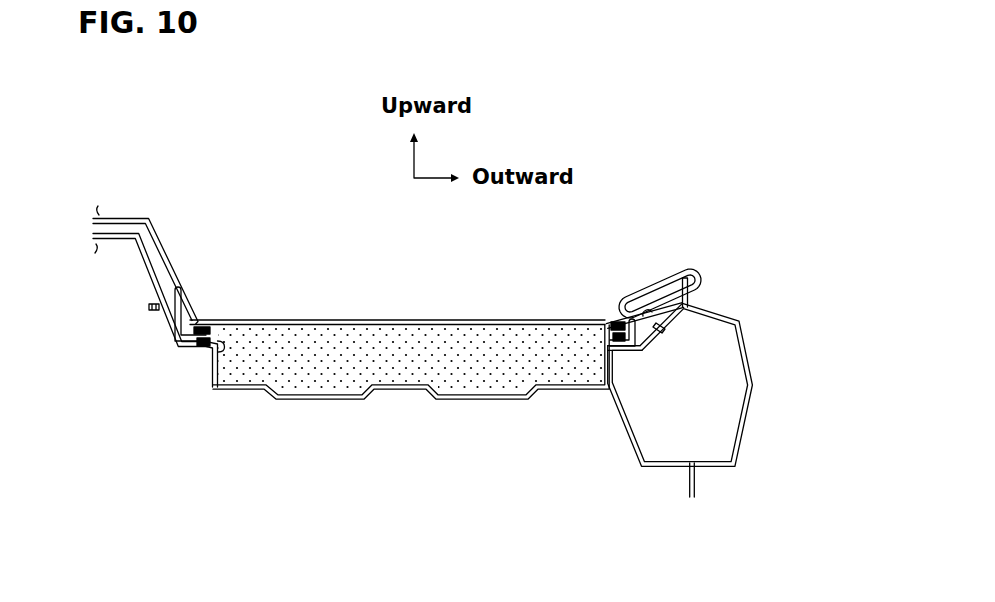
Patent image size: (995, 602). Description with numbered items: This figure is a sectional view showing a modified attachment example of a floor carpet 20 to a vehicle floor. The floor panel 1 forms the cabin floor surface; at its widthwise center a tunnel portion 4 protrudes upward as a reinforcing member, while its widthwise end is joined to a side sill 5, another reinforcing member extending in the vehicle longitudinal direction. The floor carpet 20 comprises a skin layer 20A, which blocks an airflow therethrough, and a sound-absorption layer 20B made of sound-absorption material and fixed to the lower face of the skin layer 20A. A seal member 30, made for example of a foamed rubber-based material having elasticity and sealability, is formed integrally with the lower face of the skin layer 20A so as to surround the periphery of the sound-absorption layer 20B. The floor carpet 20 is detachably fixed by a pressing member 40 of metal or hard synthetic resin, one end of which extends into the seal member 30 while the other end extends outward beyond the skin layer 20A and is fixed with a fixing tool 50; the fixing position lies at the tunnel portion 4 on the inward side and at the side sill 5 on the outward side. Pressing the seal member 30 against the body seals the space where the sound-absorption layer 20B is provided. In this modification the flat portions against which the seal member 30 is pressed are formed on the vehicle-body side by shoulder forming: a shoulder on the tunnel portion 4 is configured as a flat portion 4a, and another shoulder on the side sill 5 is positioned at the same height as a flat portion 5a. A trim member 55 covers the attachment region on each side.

The floor panel 1 is at (485, 394).
The tunnel portion 4 is at (115, 240).
The flat portion 4a is at (213, 370).
The side sill 5 is at (748, 368).
The flat portion 5a is at (625, 352).
The floor carpet 20 is at (417, 266).
The skin layer 20A is at (333, 345).
The sound-absorption layer 20B is at (390, 318).
The seal member 30 is at (205, 327).
The pressing member 40 is at (168, 328).
The fixing tool 50 is at (150, 308).
The trim member 55 is at (169, 234).